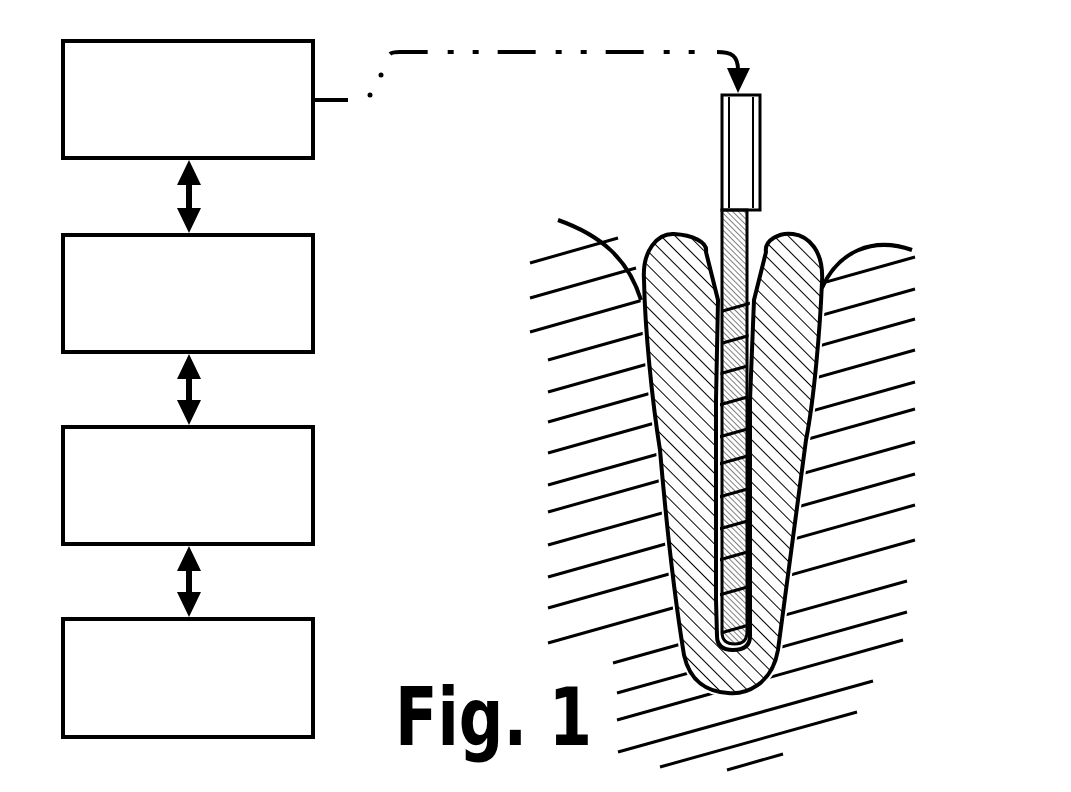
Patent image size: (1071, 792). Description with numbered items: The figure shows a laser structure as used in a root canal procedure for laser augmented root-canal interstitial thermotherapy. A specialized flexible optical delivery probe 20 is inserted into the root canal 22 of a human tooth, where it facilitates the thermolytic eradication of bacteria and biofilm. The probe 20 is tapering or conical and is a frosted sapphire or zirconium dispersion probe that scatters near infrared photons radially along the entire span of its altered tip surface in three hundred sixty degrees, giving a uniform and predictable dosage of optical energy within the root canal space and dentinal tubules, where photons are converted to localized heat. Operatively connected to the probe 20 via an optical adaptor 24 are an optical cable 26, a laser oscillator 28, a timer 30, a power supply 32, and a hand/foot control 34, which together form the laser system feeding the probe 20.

The flexible optical delivery probe 20 is at (718, 246).
The root canal 22 is at (766, 234).
The optical adaptor 24 is at (760, 145).
The optical cable 26 is at (516, 54).
The laser oscillator 28 is at (313, 118).
The timer 30 is at (313, 257).
The power supply 32 is at (313, 485).
The hand/foot control 34 is at (313, 680).